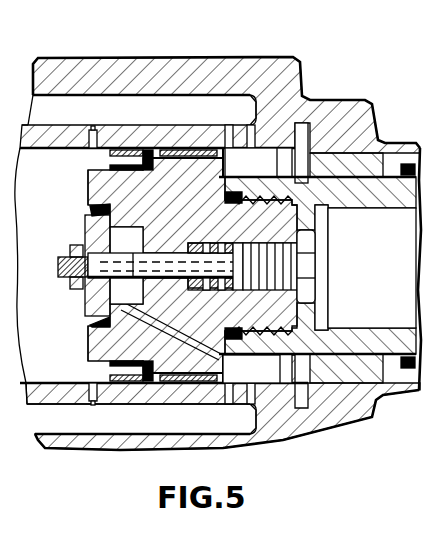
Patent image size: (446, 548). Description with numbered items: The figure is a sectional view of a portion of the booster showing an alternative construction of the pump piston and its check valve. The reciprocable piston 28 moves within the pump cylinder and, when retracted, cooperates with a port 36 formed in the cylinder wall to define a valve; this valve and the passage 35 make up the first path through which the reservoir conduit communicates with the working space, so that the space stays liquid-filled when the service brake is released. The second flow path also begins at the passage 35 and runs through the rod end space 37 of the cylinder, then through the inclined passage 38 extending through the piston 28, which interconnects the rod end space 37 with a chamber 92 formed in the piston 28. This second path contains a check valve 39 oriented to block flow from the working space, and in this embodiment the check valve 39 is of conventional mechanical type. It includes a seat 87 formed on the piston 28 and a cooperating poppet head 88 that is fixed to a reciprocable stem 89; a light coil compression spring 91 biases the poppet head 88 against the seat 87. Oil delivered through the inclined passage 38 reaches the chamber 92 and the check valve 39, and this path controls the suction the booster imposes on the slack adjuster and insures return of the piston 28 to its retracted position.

The passage 35 is at (180, 93).
The port 36 is at (88, 135).
The rod end space 37 is at (242, 165).
The passage 38 is at (193, 403).
The check valve 39 is at (48, 214).
The seat 87 is at (87, 212).
The poppet head 88 is at (85, 224).
The stem 89 is at (97, 322).
The coil compression spring 91 is at (240, 357).
The chamber 92 is at (118, 287).
The piston 28 is at (150, 395).